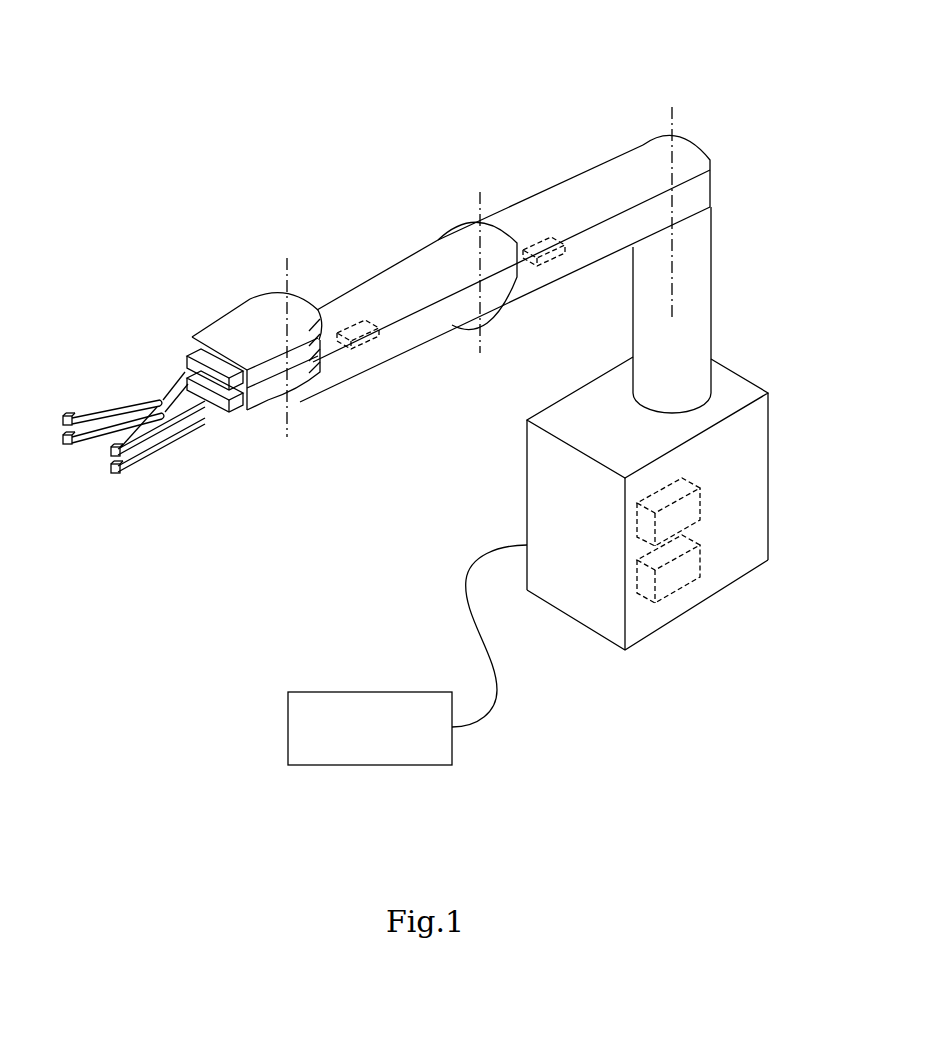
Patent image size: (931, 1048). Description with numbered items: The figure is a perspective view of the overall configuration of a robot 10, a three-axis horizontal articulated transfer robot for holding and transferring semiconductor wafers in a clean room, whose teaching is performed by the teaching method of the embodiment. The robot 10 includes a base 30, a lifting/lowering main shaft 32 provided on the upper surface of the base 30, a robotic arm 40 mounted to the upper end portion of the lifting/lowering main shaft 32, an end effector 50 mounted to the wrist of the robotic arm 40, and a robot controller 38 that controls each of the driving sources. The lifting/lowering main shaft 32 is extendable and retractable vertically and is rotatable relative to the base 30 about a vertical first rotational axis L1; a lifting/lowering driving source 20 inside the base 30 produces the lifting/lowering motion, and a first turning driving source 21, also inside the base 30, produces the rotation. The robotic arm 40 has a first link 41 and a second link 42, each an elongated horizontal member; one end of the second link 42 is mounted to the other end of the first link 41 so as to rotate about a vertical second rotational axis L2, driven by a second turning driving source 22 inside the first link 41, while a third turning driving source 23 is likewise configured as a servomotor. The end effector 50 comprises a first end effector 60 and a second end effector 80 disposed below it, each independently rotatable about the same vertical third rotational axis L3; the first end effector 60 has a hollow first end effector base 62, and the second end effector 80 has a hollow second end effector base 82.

The robot 10 is at (47, 158).
The lifting/lowering driving source 20 is at (702, 555).
The first turning driving source 21 is at (702, 495).
The second turning driving source 22 is at (555, 267).
The third turning driving source 23 is at (368, 350).
The base 30 is at (753, 435).
The lifting/lowering main shaft 32 is at (705, 277).
The robot controller 38 is at (365, 766).
The robotic arm 40 is at (396, 97).
The first link 41 is at (577, 186).
The second link 42 is at (383, 277).
The end effector 50 is at (163, 272).
The first end effector 60 is at (81, 409).
The first end effector base 62 is at (297, 403).
The second end effector 80 is at (125, 480).
The second end effector base 82 is at (265, 417).
The first rotational axis L1 is at (668, 120).
The second rotational axis L2 is at (478, 205).
The third rotational axis L3 is at (285, 268).